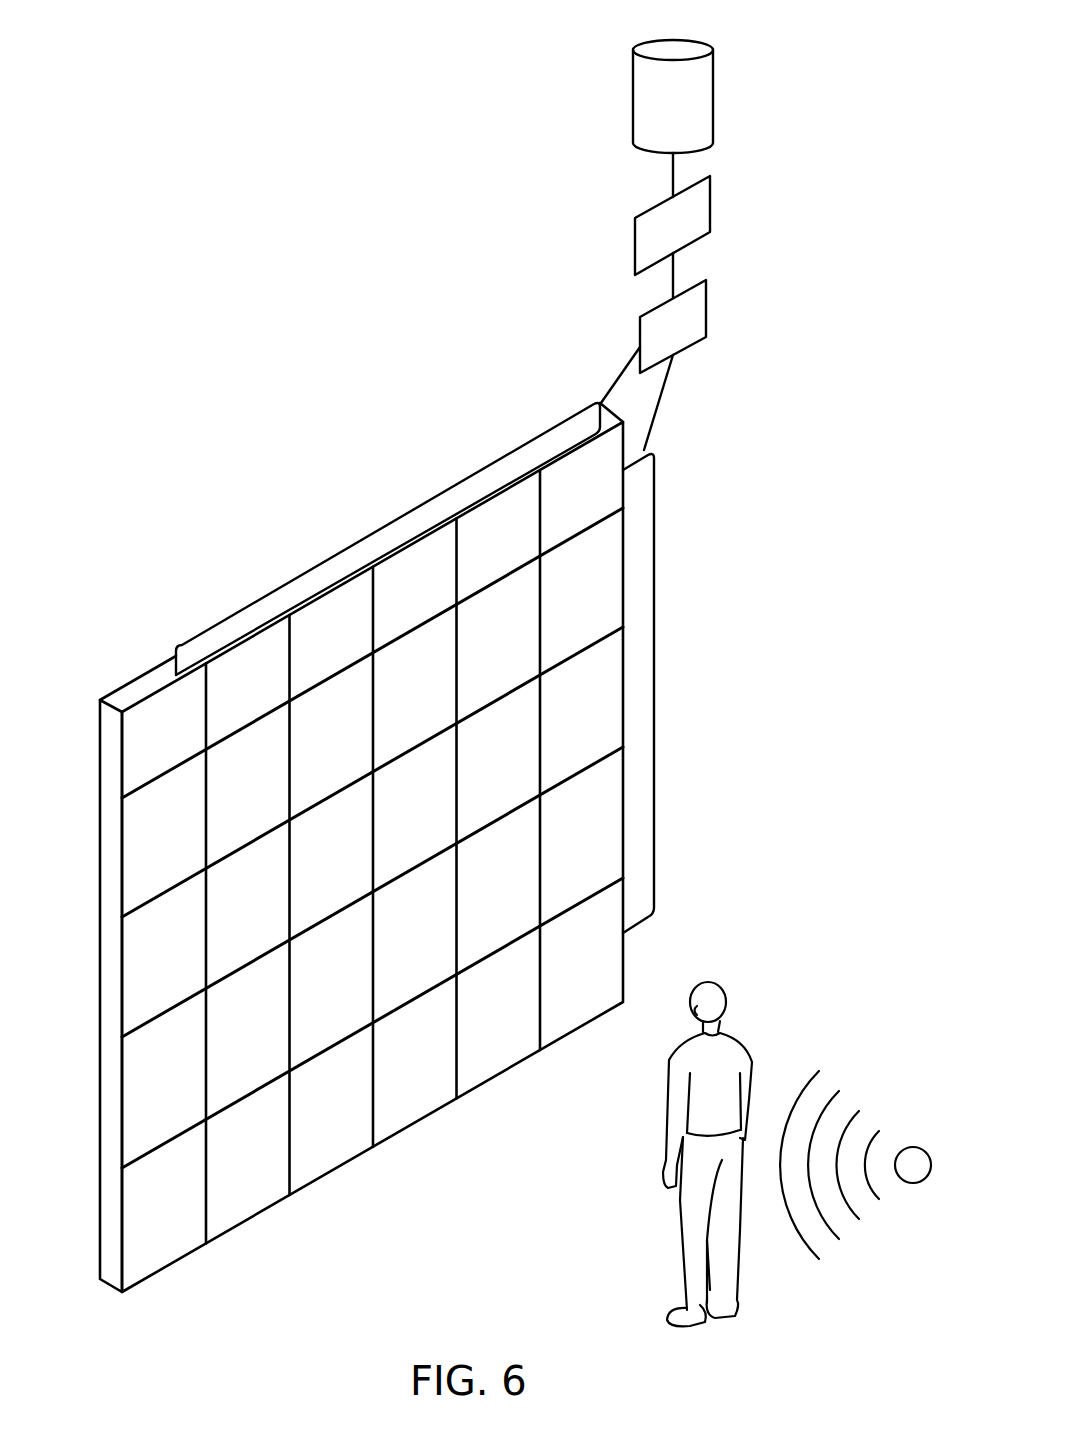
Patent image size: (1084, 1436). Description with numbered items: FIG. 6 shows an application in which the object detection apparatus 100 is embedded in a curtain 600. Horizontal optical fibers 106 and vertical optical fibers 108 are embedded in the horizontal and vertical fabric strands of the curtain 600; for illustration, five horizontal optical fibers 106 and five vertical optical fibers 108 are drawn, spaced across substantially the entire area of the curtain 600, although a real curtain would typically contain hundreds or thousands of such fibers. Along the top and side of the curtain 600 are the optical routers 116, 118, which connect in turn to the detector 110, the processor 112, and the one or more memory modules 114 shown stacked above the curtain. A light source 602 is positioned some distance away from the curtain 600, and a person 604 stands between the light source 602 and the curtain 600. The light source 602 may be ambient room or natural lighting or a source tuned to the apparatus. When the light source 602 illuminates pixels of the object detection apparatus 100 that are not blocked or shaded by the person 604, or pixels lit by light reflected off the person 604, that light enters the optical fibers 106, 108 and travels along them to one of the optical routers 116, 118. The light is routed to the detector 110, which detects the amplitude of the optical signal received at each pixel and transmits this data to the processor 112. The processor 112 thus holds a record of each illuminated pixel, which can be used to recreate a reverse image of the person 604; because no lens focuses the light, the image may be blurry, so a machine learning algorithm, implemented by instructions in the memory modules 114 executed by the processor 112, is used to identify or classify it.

The object detection apparatus 100 is at (205, 384).
The horizontal optical fibers 106 is at (122, 798).
The vertical optical fibers 108 is at (206, 1243).
The detector 110 is at (697, 306).
The processor 112 is at (702, 206).
The memory modules 114 is at (702, 101).
The optical router 116 is at (654, 727).
The optical router 118 is at (345, 551).
The curtain 600 is at (137, 690).
The light source 602 is at (915, 1147).
The person 604 is at (740, 1037).